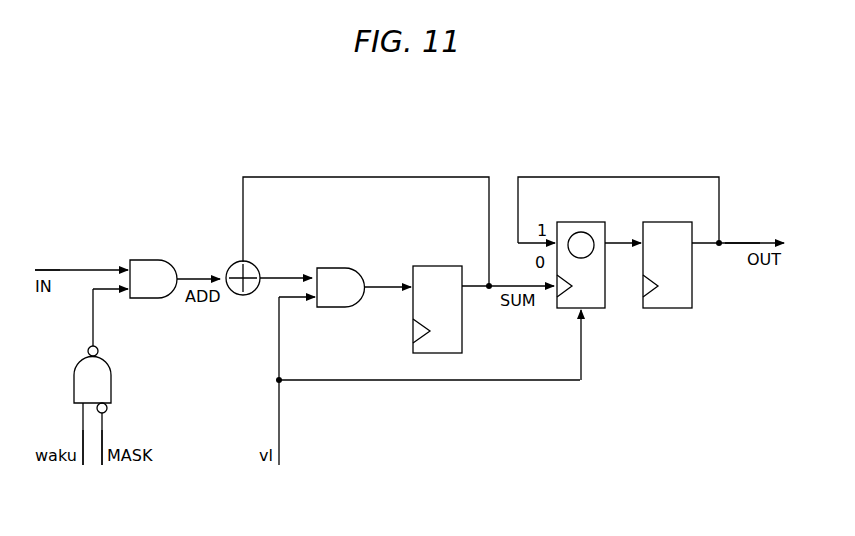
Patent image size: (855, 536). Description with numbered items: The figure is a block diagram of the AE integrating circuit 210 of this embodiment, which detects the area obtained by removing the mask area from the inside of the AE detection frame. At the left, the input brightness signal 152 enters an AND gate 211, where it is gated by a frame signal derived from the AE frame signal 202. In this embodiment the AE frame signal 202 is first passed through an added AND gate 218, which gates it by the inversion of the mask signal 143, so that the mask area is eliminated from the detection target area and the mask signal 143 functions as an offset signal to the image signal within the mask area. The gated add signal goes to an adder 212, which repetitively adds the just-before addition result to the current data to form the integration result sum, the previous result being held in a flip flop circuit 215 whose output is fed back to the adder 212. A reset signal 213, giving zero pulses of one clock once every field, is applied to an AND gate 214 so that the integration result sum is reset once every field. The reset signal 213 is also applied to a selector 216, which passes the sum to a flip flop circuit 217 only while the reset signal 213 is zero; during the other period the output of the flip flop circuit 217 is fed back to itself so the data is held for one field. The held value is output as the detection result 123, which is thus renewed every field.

The AE integrating circuit 210 is at (439, 158).
The input brightness signal 152 is at (86, 268).
The AND gate 211 is at (150, 262).
The adder 212 is at (250, 263).
The AND gate 214 is at (333, 267).
The flip flop circuit 215 is at (434, 265).
The selector 216 is at (578, 222).
The flip flop circuit 217 is at (664, 222).
The detection result 123 is at (737, 242).
The AND gate 218 is at (112, 379).
The AE frame signal 202 is at (83, 427).
The mask signal 143 is at (102, 427).
The reset signal 213 is at (279, 408).